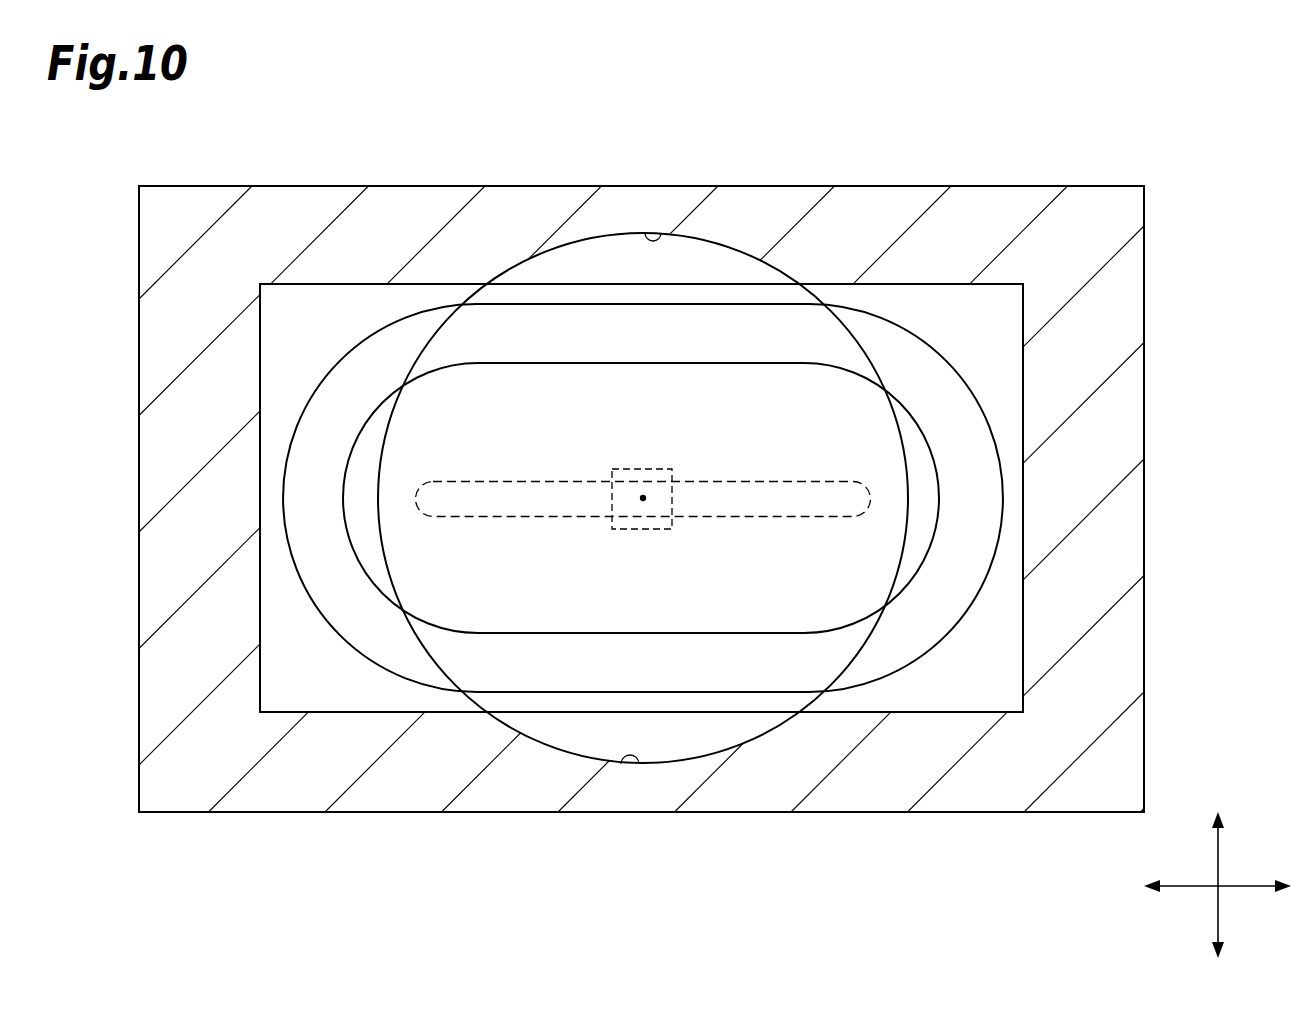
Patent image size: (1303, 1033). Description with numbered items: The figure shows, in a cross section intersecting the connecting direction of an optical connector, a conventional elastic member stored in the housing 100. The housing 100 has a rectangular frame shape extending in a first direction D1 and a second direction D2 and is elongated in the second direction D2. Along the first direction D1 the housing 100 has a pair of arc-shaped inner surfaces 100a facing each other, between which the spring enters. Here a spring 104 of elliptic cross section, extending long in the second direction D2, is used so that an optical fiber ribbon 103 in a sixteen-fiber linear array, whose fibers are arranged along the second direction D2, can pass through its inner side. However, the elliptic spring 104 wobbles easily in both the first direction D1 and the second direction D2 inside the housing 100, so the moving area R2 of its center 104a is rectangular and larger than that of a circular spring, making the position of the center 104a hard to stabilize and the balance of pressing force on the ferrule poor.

The housing 100 is at (1027, 183).
The inner surfaces 100a is at (653, 234).
The optical fiber ribbon 103 is at (470, 518).
The spring 104 is at (946, 351).
The center 104a is at (644, 499).
The moving area R2 is at (643, 530).
The first direction D1 is at (1220, 858).
The second direction D2 is at (1183, 888).